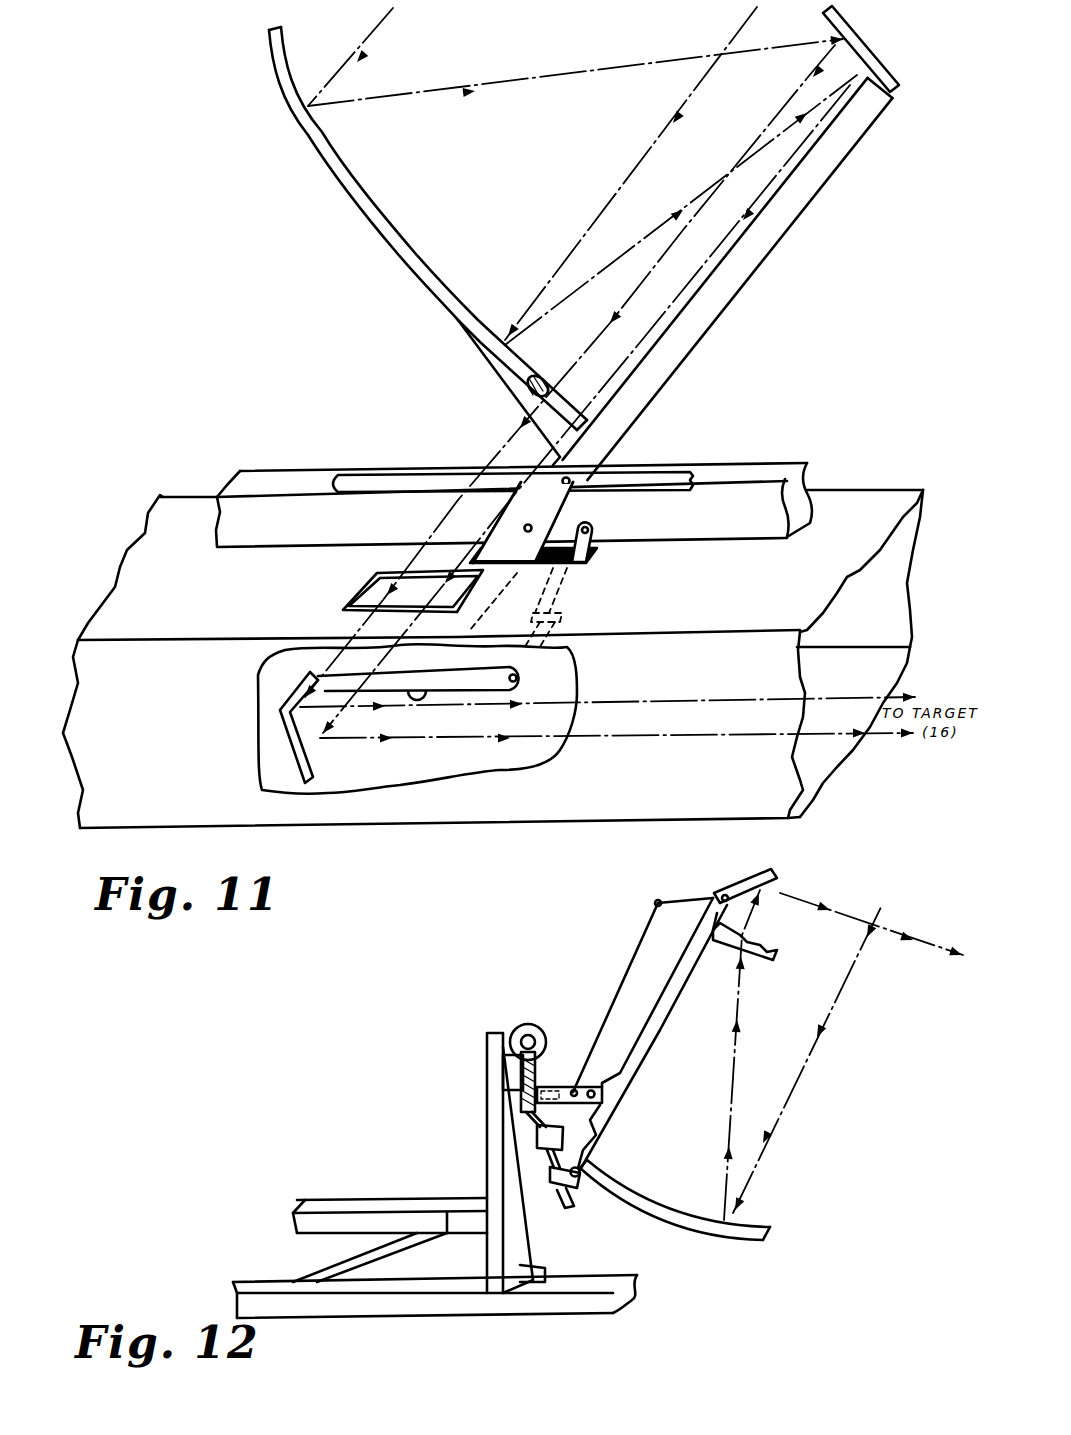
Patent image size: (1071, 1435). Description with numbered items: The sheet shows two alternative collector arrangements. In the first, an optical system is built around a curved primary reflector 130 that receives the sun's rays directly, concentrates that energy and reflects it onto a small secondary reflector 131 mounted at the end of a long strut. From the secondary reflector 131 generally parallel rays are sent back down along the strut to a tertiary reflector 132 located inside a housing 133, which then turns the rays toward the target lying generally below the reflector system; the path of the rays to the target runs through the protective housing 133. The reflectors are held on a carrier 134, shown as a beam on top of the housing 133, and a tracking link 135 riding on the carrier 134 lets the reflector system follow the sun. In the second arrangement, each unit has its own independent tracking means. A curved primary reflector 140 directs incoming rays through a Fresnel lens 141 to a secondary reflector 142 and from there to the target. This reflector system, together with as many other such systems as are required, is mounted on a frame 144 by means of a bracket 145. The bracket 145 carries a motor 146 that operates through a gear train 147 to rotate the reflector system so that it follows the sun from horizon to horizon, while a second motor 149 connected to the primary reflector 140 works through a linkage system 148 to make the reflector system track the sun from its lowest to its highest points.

In FIG. 11, the primary reflector 130 is at (402, 232).
In FIG. 11, the secondary reflector 131 is at (843, 62).
In FIG. 11, the tertiary reflector 132 is at (318, 752).
In FIG. 11, the housing 133 is at (808, 755).
In FIG. 11, the carrier 134 is at (745, 462).
In FIG. 11, the tracking link 135 is at (620, 490).
In FIG. 12, the primary reflector 140 is at (745, 1215).
In FIG. 12, the Fresnel lens 141 is at (760, 963).
In FIG. 12, the secondary reflector 142 is at (782, 880).
In FIG. 12, the frame 144 is at (372, 1287).
In FIG. 12, the bracket 145 is at (500, 1178).
In FIG. 12, the motor 146 is at (526, 1032).
In FIG. 12, the gear train 147 is at (538, 1090).
In FIG. 12, the linkage system 148 is at (640, 940).
In FIG. 12, the motor 149 is at (558, 1138).